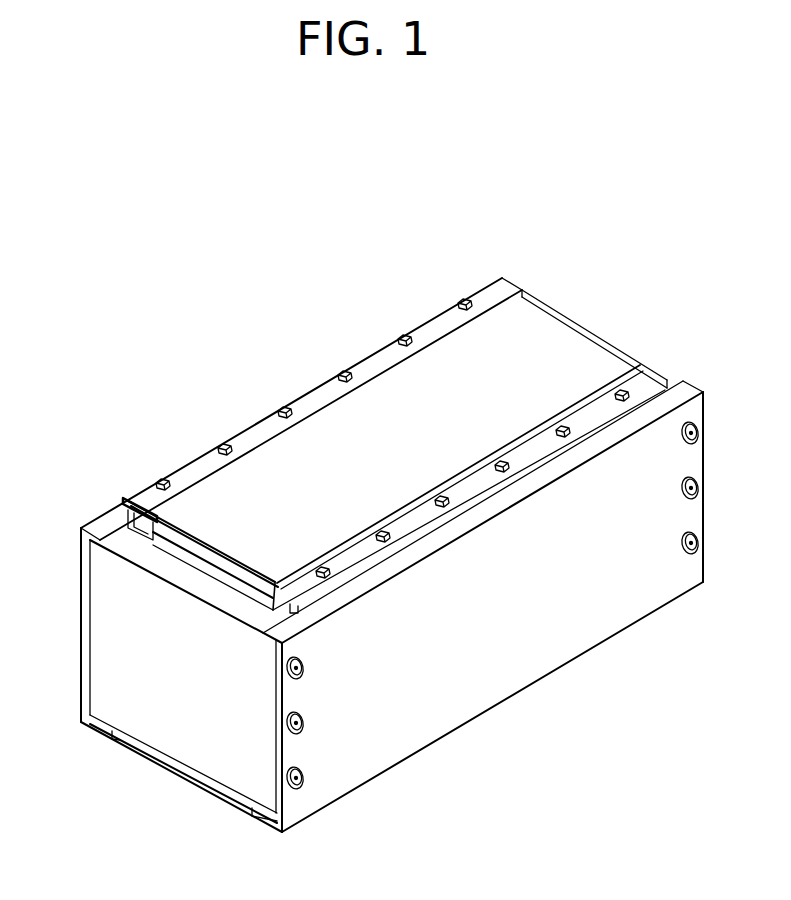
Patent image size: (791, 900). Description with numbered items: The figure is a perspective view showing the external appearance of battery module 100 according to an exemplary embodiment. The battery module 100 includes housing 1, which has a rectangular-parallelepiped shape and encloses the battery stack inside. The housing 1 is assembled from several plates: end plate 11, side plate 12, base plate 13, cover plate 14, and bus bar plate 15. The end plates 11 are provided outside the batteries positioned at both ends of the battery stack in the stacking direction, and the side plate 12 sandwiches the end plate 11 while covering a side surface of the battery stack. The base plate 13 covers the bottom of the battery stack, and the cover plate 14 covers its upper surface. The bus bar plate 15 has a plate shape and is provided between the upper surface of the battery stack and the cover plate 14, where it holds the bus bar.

The battery module 100 is at (114, 237).
The housing 1 is at (170, 779).
The end plate 11 is at (134, 700).
The side plate 12 is at (78, 593).
The base plate 13 is at (220, 793).
The cover plate 14 is at (402, 378).
The bus bar plate 15 is at (132, 504).